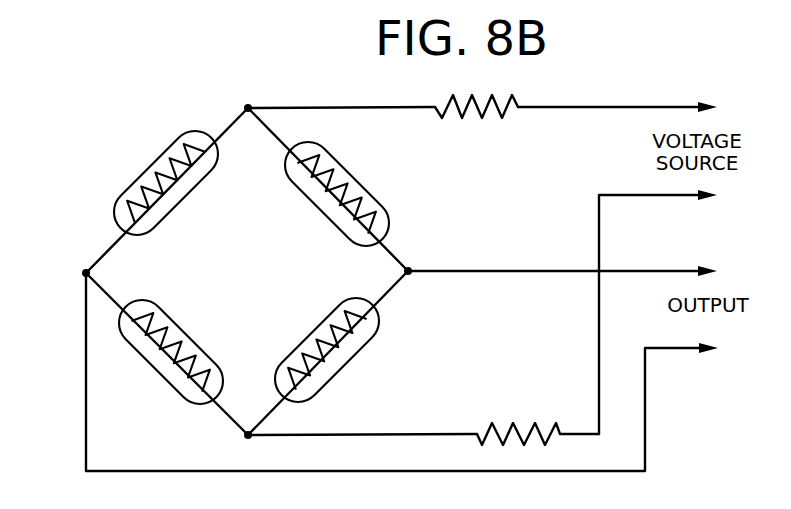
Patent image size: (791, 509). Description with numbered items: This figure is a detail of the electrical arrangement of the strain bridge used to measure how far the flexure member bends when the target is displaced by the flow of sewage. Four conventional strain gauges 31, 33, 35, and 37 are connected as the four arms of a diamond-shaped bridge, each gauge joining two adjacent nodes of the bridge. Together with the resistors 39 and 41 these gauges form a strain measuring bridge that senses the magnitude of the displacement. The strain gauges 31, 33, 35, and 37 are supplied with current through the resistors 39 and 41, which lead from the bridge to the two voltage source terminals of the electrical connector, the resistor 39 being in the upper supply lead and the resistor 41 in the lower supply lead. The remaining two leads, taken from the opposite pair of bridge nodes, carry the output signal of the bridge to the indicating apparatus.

The strain gauge 31 is at (347, 348).
The strain gauge 33 is at (147, 184).
The strain gauge 35 is at (150, 358).
The strain gauge 37 is at (352, 181).
The resistor 39 is at (474, 96).
The resistor 41 is at (519, 428).